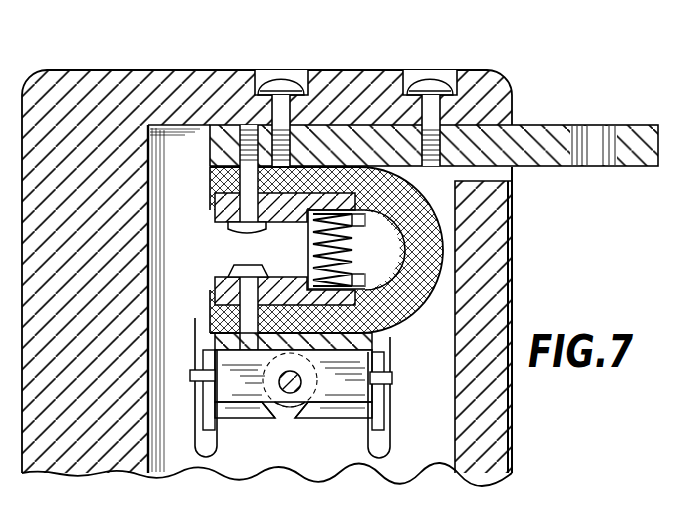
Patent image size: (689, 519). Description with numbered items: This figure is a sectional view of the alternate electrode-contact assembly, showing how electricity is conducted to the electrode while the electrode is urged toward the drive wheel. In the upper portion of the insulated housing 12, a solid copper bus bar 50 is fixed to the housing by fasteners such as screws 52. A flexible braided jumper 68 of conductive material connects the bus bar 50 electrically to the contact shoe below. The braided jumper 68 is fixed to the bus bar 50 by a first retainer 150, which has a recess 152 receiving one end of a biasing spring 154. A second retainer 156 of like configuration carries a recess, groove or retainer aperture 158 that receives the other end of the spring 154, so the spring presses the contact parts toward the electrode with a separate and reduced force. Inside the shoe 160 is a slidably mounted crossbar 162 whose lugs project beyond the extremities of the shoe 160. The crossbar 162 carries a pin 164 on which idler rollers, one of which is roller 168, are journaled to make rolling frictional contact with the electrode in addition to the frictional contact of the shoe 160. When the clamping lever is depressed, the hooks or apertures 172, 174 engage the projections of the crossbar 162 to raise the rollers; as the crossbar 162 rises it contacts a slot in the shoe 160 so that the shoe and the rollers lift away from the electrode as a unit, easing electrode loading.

The housing 12 is at (205, 70).
The bus bar 50 is at (528, 125).
The screws 52 is at (430, 70).
The flexible braided jumper 68 is at (388, 328).
The first retainer 150 is at (215, 218).
The recess 152 is at (309, 231).
The spring 154 is at (352, 246).
The second retainer 156 is at (215, 283).
The retainer aperture 158 is at (309, 263).
The shoe 160 is at (248, 420).
The crossbar 162 is at (391, 381).
The pin 164 is at (287, 395).
The idler roller 168 is at (303, 414).
The hook 172 is at (205, 423).
The hook 174 is at (386, 428).